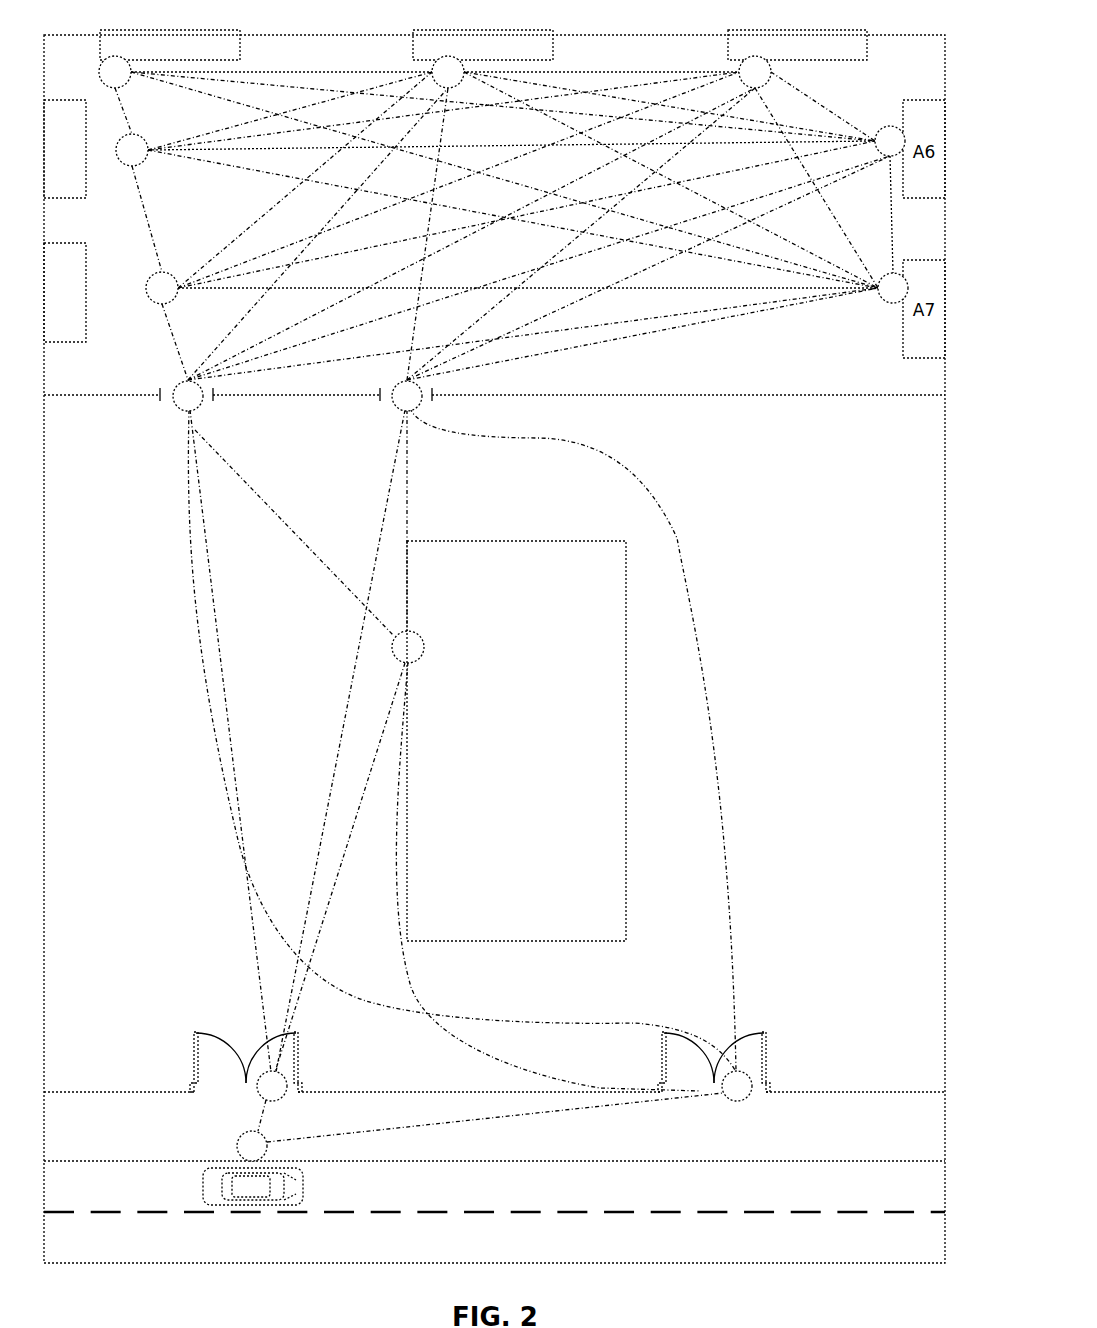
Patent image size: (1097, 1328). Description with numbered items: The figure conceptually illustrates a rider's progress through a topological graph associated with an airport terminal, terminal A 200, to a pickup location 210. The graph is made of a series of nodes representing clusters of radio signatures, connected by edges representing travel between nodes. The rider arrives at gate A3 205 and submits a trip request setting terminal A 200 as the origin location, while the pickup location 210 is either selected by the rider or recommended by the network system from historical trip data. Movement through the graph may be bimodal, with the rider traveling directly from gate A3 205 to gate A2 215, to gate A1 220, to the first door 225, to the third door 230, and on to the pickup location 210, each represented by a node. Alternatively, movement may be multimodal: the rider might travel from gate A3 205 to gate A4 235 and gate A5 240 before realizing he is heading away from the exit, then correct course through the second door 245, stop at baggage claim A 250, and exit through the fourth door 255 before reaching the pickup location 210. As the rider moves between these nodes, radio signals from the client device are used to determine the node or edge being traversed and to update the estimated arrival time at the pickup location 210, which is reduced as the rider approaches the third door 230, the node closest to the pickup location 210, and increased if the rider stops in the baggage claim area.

The terminal A 200 is at (502, 631).
The gate A3 205 is at (192, 59).
The gate A4 235 is at (506, 59).
The gate A5 240 is at (822, 59).
The gate A2 215 is at (96, 151).
The gate A1 220 is at (111, 292).
The door 1 225 is at (160, 412).
The door 2 245 is at (385, 412).
The baggage claim A 250 is at (516, 741).
The door 3 230 is at (215, 1066).
The door 4 255 is at (745, 1066).
The pickup location 210 is at (313, 1140).